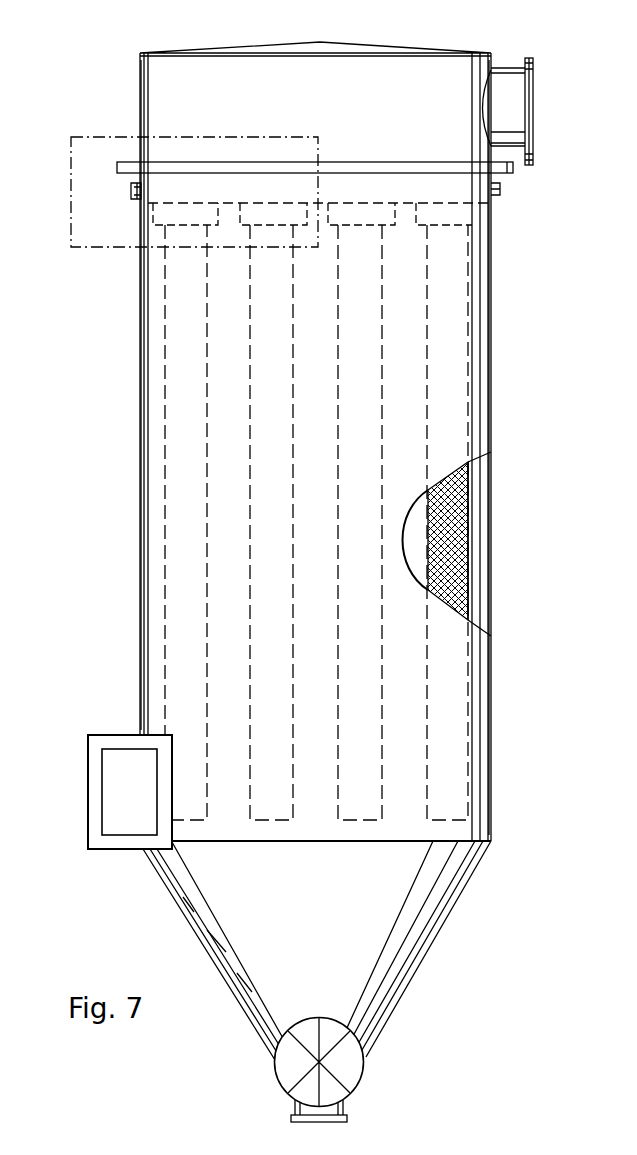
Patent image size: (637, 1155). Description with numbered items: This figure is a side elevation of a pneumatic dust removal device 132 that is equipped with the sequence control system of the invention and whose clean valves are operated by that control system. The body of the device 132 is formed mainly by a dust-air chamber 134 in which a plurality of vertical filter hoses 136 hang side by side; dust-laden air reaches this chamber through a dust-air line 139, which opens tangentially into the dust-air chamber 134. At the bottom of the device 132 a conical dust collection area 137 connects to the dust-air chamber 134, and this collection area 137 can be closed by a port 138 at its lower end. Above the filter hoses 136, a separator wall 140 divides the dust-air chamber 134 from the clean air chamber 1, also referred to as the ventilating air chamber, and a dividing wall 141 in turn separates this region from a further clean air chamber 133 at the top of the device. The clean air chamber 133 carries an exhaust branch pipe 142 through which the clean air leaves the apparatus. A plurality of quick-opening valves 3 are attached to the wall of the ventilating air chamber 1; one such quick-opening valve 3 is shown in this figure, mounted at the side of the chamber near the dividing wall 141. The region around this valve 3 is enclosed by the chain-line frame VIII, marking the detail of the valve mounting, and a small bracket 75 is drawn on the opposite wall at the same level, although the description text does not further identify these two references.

The clean air chamber 1 is at (492, 202).
The quick-opening valve 3 is at (135, 200).
The bracket 75 is at (500, 190).
The pneumatic removal device 132 is at (140, 373).
The clean air chamber 133 is at (467, 71).
The dust-air chamber 134 is at (480, 493).
The vertical filter hoses 136 is at (468, 558).
The conical dust collection area 137 is at (445, 883).
The port 138 is at (337, 1064).
The dust-air line 139 is at (122, 812).
The separator wall 140 is at (495, 230).
The dividing wall 141 is at (512, 166).
The exhaust branch pipe 142 is at (527, 105).
The section indicator VIII is at (92, 182).